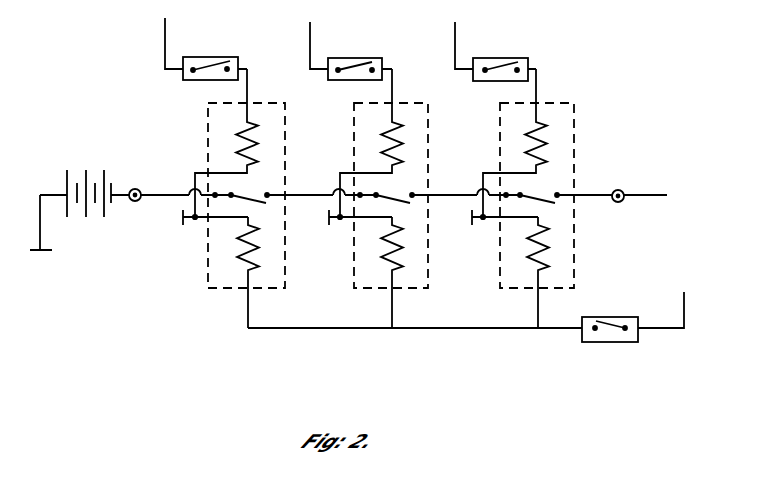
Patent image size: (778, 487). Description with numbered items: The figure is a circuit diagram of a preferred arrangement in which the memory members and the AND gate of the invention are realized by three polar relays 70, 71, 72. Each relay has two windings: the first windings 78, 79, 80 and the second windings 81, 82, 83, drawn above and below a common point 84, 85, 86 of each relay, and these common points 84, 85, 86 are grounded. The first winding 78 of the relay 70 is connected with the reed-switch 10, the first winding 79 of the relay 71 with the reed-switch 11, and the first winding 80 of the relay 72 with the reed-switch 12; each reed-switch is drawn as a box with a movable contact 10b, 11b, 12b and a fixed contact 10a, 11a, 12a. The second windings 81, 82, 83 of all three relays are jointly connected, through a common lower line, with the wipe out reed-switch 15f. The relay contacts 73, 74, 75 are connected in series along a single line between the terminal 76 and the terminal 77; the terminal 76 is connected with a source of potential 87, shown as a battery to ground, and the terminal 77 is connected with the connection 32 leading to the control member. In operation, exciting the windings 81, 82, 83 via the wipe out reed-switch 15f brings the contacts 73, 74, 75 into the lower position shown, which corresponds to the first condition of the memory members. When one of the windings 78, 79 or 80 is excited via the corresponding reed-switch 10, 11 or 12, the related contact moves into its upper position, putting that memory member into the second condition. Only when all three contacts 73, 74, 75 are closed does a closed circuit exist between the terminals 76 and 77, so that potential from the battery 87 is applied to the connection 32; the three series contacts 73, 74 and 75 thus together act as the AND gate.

The reed-switch 10 is at (208, 57).
The switch fixed contact 10a is at (247, 67).
The switch movable contact 10b is at (192, 69).
The reed-switch 11 is at (355, 57).
The switch fixed contact 11a is at (392, 68).
The switch movable contact 11b is at (338, 68).
The reed-switch 12 is at (500, 57).
The switch fixed contact 12a is at (536, 68).
The switch movable contact 12b is at (485, 68).
The wipe out reed-switch 15f is at (610, 343).
The connection 32 is at (655, 197).
The polar relay 70 is at (208, 263).
The polar relay 71 is at (355, 263).
The polar relay 72 is at (577, 263).
The contact 73 is at (252, 190).
The contact 74 is at (397, 190).
The contact 75 is at (543, 190).
The terminal 76 is at (134, 188).
The terminal 77 is at (622, 205).
The first winding 78 is at (235, 138).
The first winding 79 is at (378, 138).
The first winding 80 is at (520, 140).
The second winding 81 is at (240, 268).
The second winding 82 is at (382, 270).
The second winding 83 is at (525, 250).
The common point 84 is at (187, 224).
The common point 85 is at (334, 224).
The common point 86 is at (482, 224).
The source of potential 87 is at (77, 170).